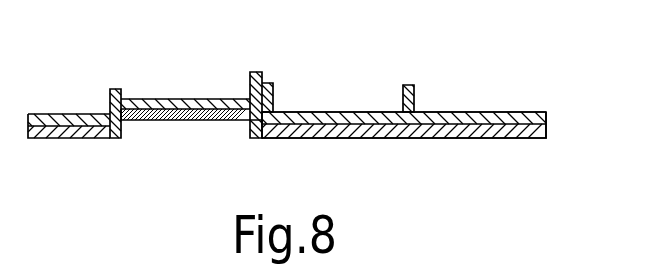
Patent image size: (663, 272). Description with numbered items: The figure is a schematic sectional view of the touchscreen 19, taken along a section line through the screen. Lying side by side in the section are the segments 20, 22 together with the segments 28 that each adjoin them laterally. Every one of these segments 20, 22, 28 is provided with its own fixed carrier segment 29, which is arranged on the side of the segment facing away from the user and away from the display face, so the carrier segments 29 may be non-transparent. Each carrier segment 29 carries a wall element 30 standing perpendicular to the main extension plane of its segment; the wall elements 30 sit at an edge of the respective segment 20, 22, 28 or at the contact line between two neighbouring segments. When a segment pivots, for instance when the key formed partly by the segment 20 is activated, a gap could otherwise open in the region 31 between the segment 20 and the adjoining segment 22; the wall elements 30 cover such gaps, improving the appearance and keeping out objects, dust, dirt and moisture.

The touchscreen 19 is at (404, 156).
The segment 22 is at (368, 138).
The segment 20 is at (166, 121).
The segment 28 is at (78, 138).
The carrier segment 29 is at (70, 121).
The wall element 30 is at (117, 90).
The region 31 is at (255, 128).